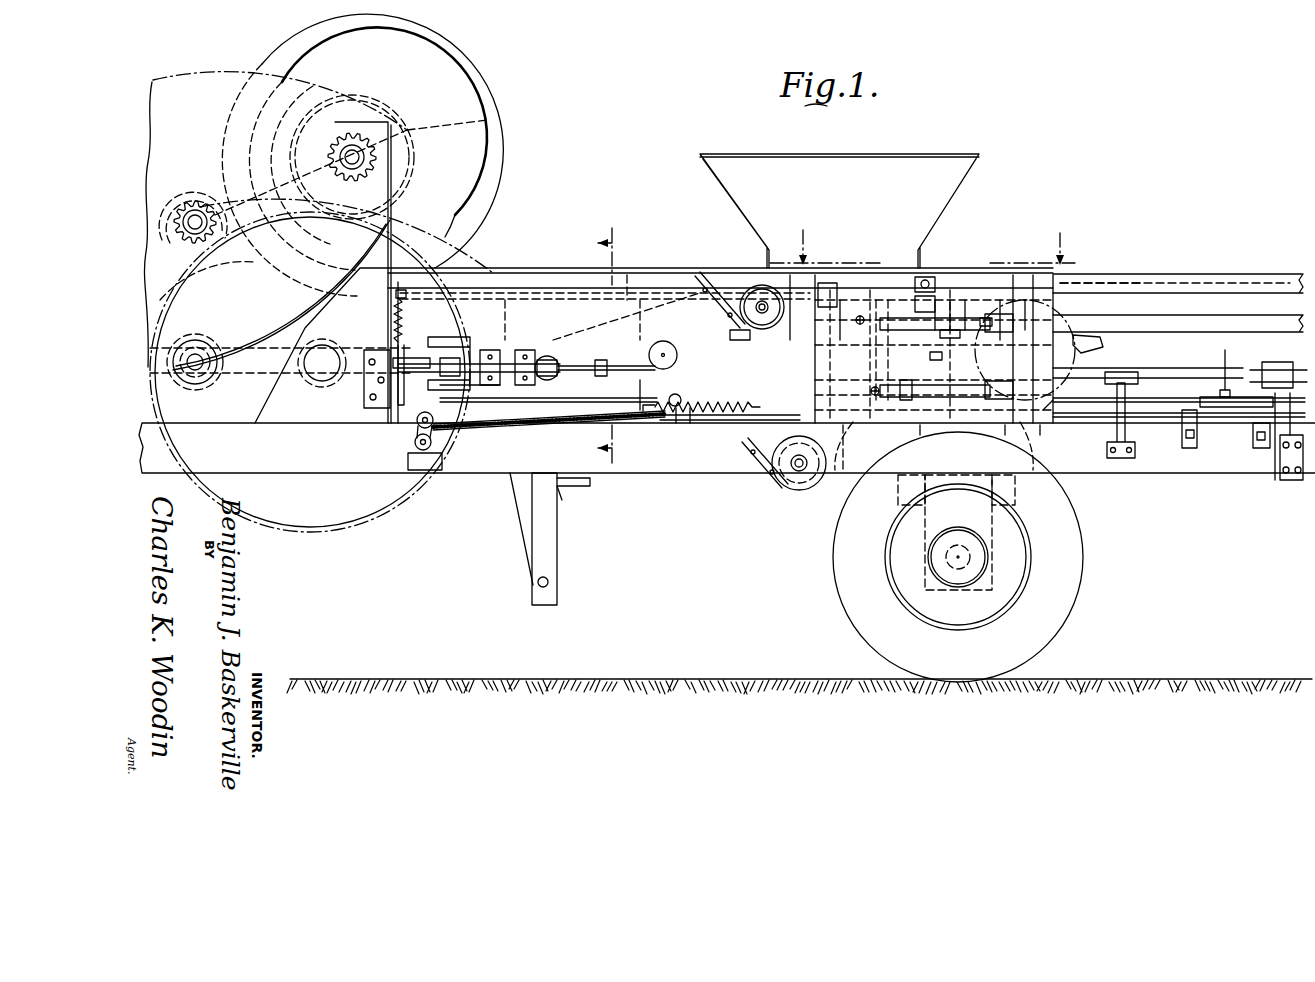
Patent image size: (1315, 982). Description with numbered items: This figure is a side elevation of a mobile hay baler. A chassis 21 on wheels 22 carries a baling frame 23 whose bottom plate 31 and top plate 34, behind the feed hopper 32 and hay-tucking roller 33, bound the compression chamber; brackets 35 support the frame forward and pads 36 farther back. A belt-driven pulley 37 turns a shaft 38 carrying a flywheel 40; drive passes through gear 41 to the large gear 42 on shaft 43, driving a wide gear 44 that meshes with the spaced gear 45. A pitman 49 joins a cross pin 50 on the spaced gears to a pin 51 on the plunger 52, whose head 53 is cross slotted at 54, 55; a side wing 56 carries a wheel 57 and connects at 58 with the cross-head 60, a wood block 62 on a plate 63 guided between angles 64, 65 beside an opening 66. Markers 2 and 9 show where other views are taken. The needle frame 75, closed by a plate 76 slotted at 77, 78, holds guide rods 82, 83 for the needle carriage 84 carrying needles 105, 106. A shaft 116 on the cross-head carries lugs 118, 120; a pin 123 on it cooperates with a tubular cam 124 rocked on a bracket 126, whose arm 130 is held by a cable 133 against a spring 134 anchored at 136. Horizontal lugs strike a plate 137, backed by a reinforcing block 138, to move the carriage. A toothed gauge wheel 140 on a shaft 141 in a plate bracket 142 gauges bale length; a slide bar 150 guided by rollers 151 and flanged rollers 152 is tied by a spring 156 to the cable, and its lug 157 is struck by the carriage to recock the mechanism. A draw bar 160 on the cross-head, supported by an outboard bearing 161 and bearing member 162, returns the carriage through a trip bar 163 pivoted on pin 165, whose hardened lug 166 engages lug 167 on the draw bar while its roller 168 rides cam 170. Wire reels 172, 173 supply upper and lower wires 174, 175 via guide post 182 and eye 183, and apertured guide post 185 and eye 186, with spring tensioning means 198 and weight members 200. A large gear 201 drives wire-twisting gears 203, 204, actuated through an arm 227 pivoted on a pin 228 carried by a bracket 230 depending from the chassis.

The section line 2- 2 is at (922, 242).
The section line 9- 9 is at (616, 346).
The chassis 21 is at (264, 458).
The wheels 22 is at (835, 568).
The baling frame 23 is at (546, 268).
The bottom plate 31 is at (692, 425).
The feed hopper 32 is at (975, 172).
The roller for tucking hay 33 is at (935, 300).
The top plate 34 is at (1100, 273).
The brackets 35 is at (297, 418).
The pads 36 is at (1025, 425).
The pulley 37 is at (383, 148).
The shaft 38 is at (368, 159).
The flywheel 40 is at (472, 153).
The gear 41 is at (346, 141).
The large gear 42 is at (173, 88).
The shaft 43 is at (195, 215).
The wide gear 44 is at (216, 262).
The dual spaced gear 45 is at (440, 268).
The pitman 49 is at (275, 345).
The cross pin 50 is at (199, 380).
The pin 51 is at (673, 293).
The plunger 52 is at (700, 280).
The head 53 is at (716, 300).
The cross slot 54 is at (740, 320).
The cross slot 55 is at (720, 410).
The side wing 56 is at (600, 364).
The wheel 57 is at (644, 430).
The connecting member 58 is at (548, 355).
The cross-head 60 is at (490, 386).
The block of wood 62 is at (432, 345).
The plate 63 is at (490, 348).
The angle 64 is at (657, 340).
The angle 65 is at (590, 422).
The opening 66 is at (580, 360).
The needle frame 75 is at (1025, 300).
The plate 76 is at (852, 290).
The slot 77 is at (965, 300).
The slot 78 is at (905, 385).
The guide rod 82 is at (920, 273).
The guide rod 83 is at (1035, 470).
The needle carriage 84 is at (850, 427).
The needle 105 is at (905, 320).
The needle 106 is at (955, 425).
The shaft 116 is at (460, 392).
The lug 118 is at (520, 350).
The lug 120 is at (530, 425).
The pin 123 is at (453, 345).
The tubular cam 124 is at (397, 348).
The bracket 126 is at (342, 372).
The arm 130 is at (377, 404).
The cable 133 is at (417, 426).
The spring 134 is at (397, 322).
The framework anchorage 136 is at (396, 298).
The plate 137 is at (690, 345).
The reinforcing block 138 is at (656, 414).
The toothed gauge wheel 140 is at (1185, 400).
The shaft 141 is at (1224, 390).
The plate bracket 142 is at (1180, 446).
The slide bar 150 is at (770, 446).
The rollers 151 is at (1192, 422).
The flanged rollers 152 is at (1255, 440).
The spring 156 is at (678, 425).
The lug 157 is at (1005, 425).
The draw bar 160 is at (610, 400).
The outboard bearing 161 is at (1278, 355).
The slide or bearing member 162 is at (1130, 370).
The trip bar 163 is at (1092, 328).
The pin 165 is at (950, 300).
The hardened lug 166 is at (1095, 344).
The lug 167 is at (945, 331).
The roller 168 is at (1062, 307).
The cam 170 is at (1015, 348).
The wire reel 172 is at (768, 286).
The wire reel 173 is at (798, 491).
The upper wire 174 is at (817, 300).
The lower wire 175 is at (835, 455).
The guide post 182 is at (876, 300).
The eye 183 is at (888, 299).
The apertured guide post 185 is at (850, 425).
The eye 186 is at (920, 425).
The adjustable spring tensioning means 198 is at (706, 278).
The weighted rings 200 is at (856, 322).
The large gear 201 is at (1056, 406).
The wire twisting gear 203 is at (1000, 314).
The wire twisting gear 204 is at (935, 355).
The arm 227 is at (514, 506).
The pin 228 is at (540, 585).
The bracket 230 is at (550, 522).